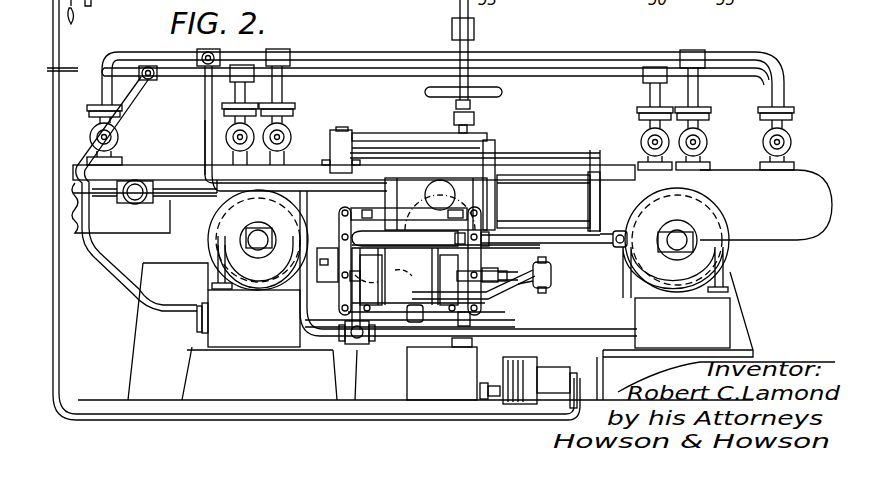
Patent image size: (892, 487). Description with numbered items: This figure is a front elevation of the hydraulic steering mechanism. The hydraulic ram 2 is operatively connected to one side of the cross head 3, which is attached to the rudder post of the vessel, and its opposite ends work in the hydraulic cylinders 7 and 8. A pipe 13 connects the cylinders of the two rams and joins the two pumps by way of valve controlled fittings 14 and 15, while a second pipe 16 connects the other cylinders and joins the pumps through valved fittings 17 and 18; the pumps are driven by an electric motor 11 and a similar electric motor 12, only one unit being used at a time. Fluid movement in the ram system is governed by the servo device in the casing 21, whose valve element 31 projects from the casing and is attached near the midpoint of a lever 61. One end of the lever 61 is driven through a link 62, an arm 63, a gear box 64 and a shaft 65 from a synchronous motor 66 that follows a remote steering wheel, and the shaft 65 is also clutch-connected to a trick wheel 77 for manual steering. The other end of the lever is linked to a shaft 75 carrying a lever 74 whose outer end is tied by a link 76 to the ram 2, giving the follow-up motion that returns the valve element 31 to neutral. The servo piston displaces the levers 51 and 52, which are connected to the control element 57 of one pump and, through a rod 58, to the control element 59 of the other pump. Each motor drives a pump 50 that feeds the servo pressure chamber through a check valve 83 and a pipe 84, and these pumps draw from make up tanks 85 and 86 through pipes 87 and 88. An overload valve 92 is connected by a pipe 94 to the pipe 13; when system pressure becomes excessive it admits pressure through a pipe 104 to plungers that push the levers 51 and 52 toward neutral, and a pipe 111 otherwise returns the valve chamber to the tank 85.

The hydraulic ram 2 is at (548, 214).
The cross head 3 is at (447, 203).
The hydraulic cylinder 7 is at (139, 167).
The hydraulic cylinder 8 is at (803, 178).
The electric motor 11 is at (213, 229).
The electric motor 12 is at (703, 222).
The pipe 13 is at (536, 58).
The valve controlled fitting 14 is at (288, 128).
The valve controlled fitting 15 is at (708, 142).
The second pipe 16 is at (588, 78).
The valved fitting 17 is at (228, 107).
The valved fitting 18 is at (650, 122).
The casing 21 is at (490, 297).
The valve element 31 is at (505, 286).
The pump 50 is at (260, 247).
The lever 51 is at (368, 262).
The lever 52 is at (481, 221).
The control element 57 is at (342, 220).
The rod 58 is at (595, 246).
The control element 59 is at (623, 230).
The lever 61 is at (551, 276).
The link 62 is at (525, 284).
The arm 63 is at (389, 296).
The gear box 64 is at (458, 386).
The shaft 65 is at (472, 325).
The synchronous motor 66 is at (528, 362).
The lever 74 is at (330, 135).
The shaft 75 is at (338, 130).
The link 76 is at (399, 138).
The trick wheel 77 is at (496, 92).
The check valve 83 is at (356, 344).
The pipe 84 is at (309, 324).
The make up tank 85 is at (268, 327).
The make up tank 86 is at (688, 327).
The pipe 87 is at (216, 280).
The pipe 88 is at (720, 270).
The valve 92 is at (136, 204).
The pipe 94 is at (205, 115).
The pipe 104 is at (204, 162).
The pipe 111 is at (113, 275).